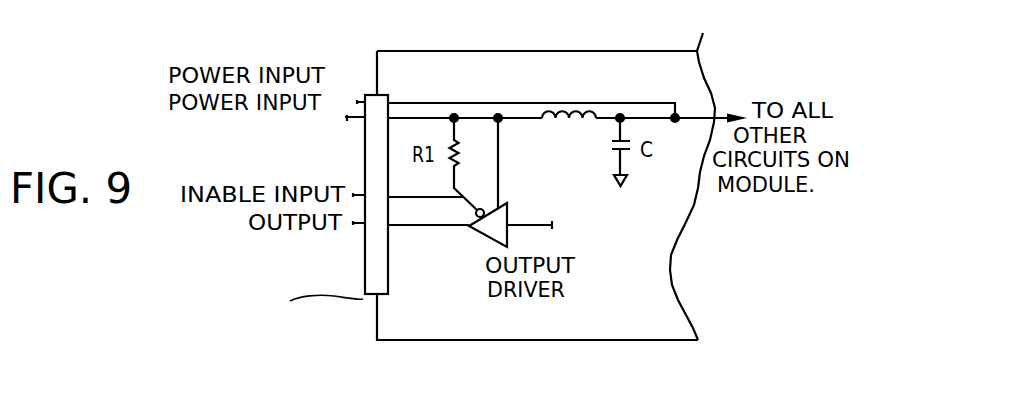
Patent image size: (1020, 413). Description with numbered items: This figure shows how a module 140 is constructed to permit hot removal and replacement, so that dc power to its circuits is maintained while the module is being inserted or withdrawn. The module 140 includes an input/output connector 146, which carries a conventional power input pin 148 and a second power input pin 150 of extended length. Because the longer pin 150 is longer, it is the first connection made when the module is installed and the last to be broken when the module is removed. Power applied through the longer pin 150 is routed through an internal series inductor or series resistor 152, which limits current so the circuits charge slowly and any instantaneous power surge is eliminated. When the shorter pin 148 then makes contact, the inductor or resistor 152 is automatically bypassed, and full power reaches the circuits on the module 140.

The module 140 is at (457, 51).
The input/output (I/O) connector 146 is at (382, 101).
The conventional power input pin 148 is at (358, 100).
The second power input pin of extended length 150 is at (352, 121).
The internal series inductor or series resistor 152 is at (589, 116).